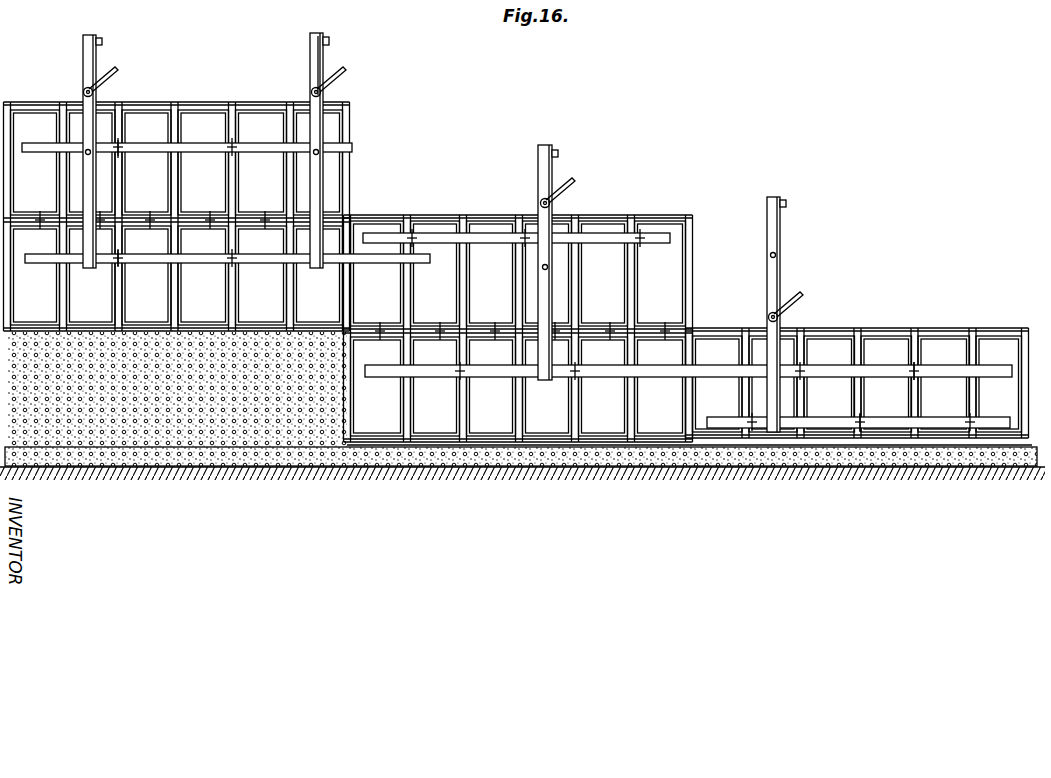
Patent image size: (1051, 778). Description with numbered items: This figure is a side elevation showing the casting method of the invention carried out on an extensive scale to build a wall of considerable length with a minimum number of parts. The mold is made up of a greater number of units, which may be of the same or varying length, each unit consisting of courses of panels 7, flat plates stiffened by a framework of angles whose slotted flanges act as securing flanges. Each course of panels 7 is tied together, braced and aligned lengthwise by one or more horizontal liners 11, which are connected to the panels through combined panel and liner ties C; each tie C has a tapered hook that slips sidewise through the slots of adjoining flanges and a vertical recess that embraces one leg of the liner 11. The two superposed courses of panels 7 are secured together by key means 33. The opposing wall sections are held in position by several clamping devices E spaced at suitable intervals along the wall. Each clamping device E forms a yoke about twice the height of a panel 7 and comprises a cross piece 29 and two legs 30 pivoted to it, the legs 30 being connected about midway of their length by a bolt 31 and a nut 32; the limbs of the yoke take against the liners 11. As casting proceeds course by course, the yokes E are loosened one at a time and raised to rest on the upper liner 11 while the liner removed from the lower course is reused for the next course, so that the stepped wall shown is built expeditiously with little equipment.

The panel 7 is at (516, 272).
The liner 11 is at (138, 160).
The cross piece 29 is at (102, 41).
The leg 30 is at (321, 60).
The bolt 31 is at (311, 92).
The nut 32 is at (106, 86).
The key means 33 is at (142, 222).
The combined panel and liner tie C is at (238, 146).
The clamping device E is at (96, 62).